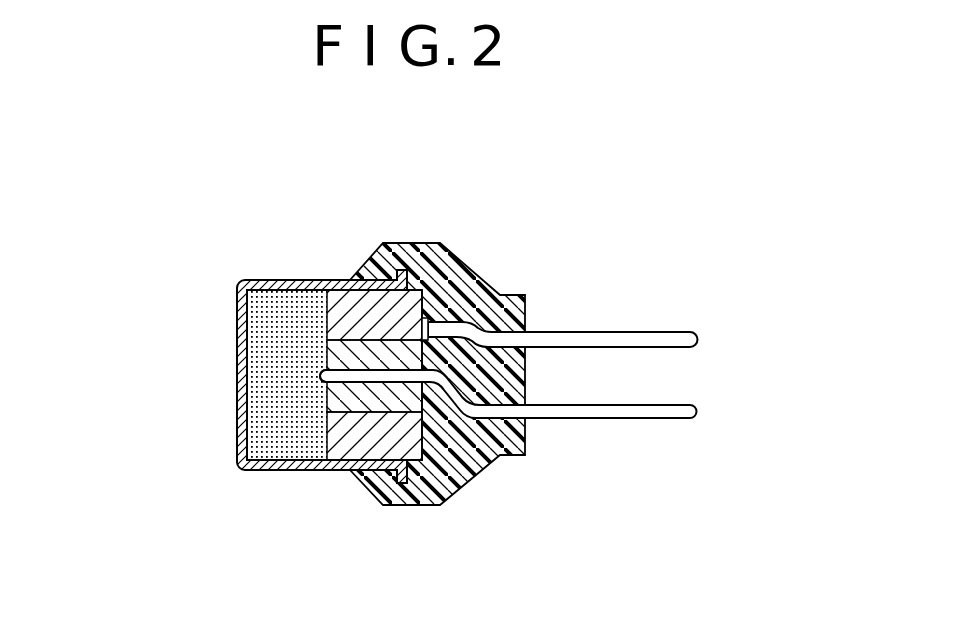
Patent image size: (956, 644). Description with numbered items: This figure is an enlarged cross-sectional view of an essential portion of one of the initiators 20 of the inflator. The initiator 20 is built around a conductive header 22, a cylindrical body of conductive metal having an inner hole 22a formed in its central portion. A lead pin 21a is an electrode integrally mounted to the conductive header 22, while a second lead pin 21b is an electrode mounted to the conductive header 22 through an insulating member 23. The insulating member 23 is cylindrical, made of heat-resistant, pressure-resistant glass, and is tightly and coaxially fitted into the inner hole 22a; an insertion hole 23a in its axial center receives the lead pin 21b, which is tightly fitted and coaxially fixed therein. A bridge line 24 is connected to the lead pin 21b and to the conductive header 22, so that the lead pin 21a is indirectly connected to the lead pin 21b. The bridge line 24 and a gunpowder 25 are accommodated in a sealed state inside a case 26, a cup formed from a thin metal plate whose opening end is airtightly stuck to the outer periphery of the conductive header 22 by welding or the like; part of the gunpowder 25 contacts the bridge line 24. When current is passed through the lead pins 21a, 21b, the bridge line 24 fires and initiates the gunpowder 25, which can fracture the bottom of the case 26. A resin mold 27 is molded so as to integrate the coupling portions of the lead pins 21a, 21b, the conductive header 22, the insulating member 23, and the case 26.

The initiator 20 is at (494, 208).
The lead pin 21a is at (662, 338).
The lead pin 21b is at (662, 412).
The conductive header 22 is at (347, 364).
The inner hole 22a is at (403, 343).
The insulating member 23 is at (347, 393).
The insertion hole 23a is at (322, 380).
The bridge line 24 is at (322, 385).
The gunpowder 25 is at (263, 375).
The case 26 is at (245, 323).
The resin mold 27 is at (458, 280).